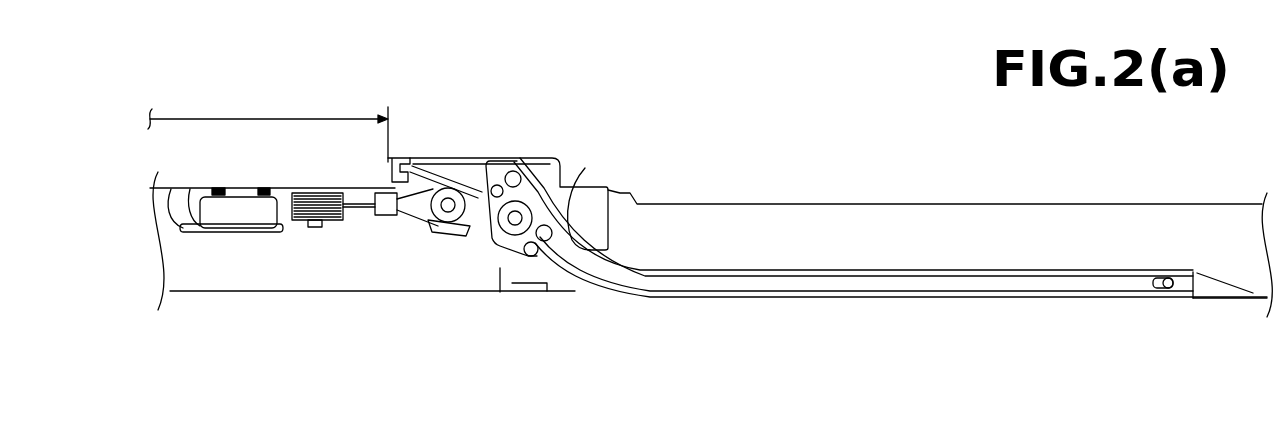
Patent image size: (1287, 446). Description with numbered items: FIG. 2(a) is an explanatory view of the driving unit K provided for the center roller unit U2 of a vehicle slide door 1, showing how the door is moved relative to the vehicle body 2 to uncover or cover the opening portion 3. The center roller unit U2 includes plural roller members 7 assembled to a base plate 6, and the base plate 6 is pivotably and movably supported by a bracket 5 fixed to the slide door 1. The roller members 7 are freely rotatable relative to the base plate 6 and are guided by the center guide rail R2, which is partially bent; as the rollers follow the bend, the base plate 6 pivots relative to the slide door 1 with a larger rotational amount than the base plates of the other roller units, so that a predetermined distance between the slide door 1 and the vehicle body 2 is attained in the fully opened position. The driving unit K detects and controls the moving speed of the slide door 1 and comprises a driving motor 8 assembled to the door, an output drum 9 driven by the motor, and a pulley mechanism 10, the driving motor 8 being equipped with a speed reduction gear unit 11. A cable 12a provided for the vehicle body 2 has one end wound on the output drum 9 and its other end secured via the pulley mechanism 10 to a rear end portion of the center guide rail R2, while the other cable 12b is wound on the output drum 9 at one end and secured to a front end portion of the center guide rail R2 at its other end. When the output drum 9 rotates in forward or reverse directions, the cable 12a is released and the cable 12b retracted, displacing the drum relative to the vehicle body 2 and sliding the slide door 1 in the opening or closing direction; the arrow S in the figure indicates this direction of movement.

The slide door 1 is at (357, 292).
The vehicle body 2 is at (780, 205).
The opening portion 3 is at (268, 121).
The bracket 5 is at (440, 231).
The base plate 6 is at (512, 258).
The roller members 7 is at (585, 195).
The driving motor 8 is at (194, 192).
The output drum 9 is at (298, 221).
The pulley mechanism 10 is at (463, 238).
The speed reduction gear unit 11 is at (236, 197).
The cable 12a is at (917, 283).
The other cable 12b is at (436, 166).
The driving unit K is at (236, 250).
The center roller unit U2 is at (541, 270).
The center guide rail R2 is at (747, 300).
The sheet S is at (627, 328).